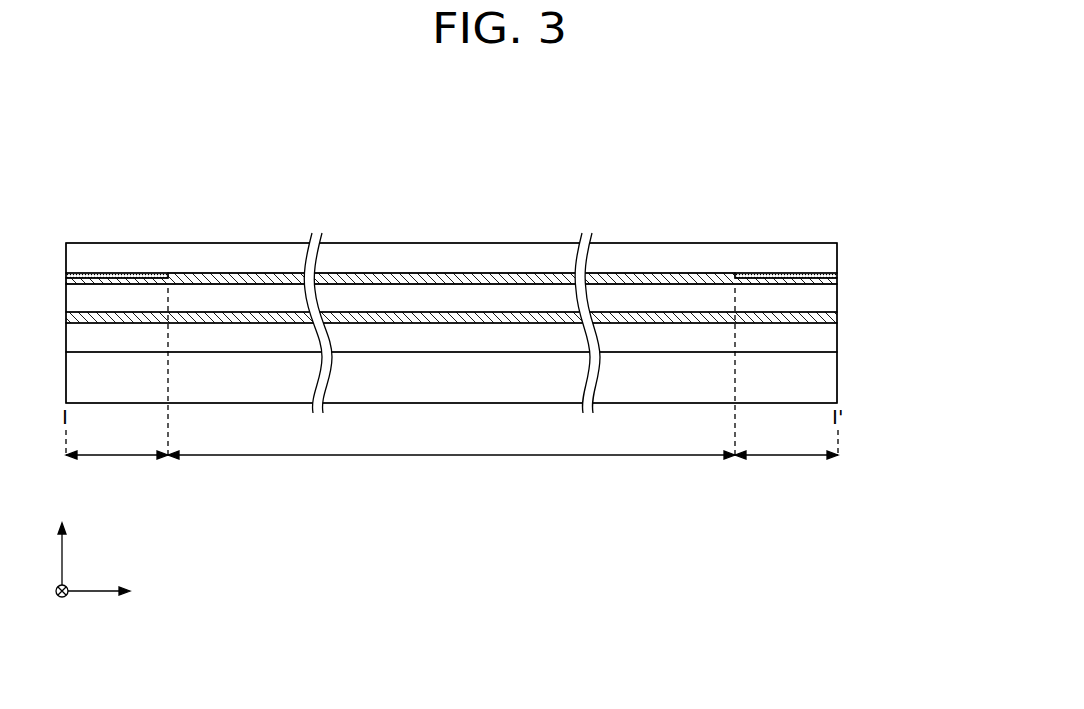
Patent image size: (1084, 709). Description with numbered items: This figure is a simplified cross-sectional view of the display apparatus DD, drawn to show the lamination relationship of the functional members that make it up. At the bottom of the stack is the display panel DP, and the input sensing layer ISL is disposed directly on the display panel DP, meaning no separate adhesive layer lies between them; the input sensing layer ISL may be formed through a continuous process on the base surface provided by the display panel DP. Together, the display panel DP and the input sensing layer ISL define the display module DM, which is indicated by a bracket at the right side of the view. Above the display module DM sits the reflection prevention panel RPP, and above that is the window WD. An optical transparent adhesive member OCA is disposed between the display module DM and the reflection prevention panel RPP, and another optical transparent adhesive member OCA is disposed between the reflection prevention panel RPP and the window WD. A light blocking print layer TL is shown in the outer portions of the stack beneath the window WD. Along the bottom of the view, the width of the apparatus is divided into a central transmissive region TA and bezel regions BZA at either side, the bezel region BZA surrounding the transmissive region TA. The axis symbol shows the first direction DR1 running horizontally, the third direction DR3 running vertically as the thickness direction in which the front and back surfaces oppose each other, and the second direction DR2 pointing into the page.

The display apparatus DD is at (891, 181).
The window WD is at (826, 259).
The light blocking layer (bezel print layer) TL is at (786, 275).
The optical transparent adhesive member OCA is at (511, 312).
The reflection prevention panel RPP is at (826, 296).
The input sensing layer ISL is at (826, 337).
The display panel DP is at (826, 375).
The display module DM is at (514, 363).
The bezel region BZA is at (452, 386).
The transmissive region TA is at (451, 468).
The first direction DR1 is at (116, 592).
The second direction DR2 is at (62, 606).
The third direction DR3 is at (62, 545).